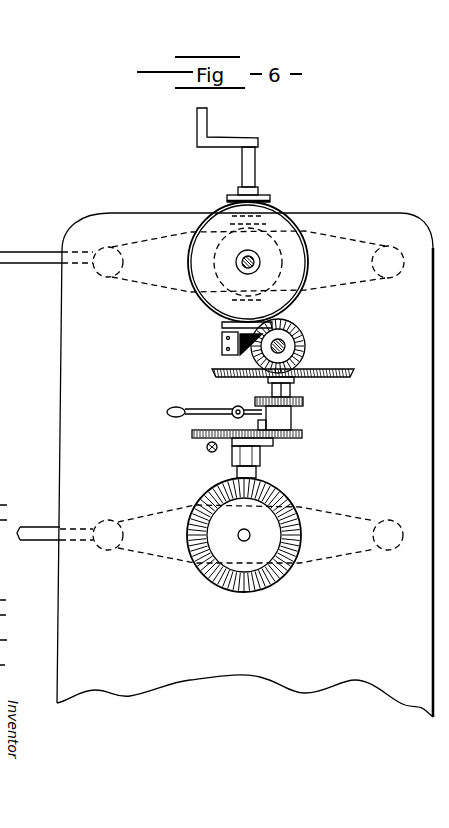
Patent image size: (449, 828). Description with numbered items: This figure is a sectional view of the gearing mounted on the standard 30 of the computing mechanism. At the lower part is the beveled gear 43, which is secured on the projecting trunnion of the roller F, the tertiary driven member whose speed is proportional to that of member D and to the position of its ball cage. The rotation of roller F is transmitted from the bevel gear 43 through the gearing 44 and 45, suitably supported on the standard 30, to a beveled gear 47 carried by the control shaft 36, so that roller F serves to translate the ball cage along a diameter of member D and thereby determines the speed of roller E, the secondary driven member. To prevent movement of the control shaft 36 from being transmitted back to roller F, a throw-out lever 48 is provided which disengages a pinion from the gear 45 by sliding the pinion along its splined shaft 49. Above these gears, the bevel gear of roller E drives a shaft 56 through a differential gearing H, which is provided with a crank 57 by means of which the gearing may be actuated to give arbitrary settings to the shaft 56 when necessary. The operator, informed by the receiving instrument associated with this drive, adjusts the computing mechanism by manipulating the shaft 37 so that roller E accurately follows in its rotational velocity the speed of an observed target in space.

The standard 30 is at (216, 465).
The crank 57 is at (252, 176).
The differential gearing H is at (199, 299).
The shaft 56 is at (260, 262).
The beveled gear 47 is at (296, 334).
The control shaft 36 is at (297, 349).
The splined shaft 49 is at (270, 389).
The gear 45 is at (304, 403).
The throw-out lever 48 is at (176, 418).
The gear 44 is at (303, 437).
The shaft 37 is at (208, 450).
The beveled gear 43 is at (244, 589).